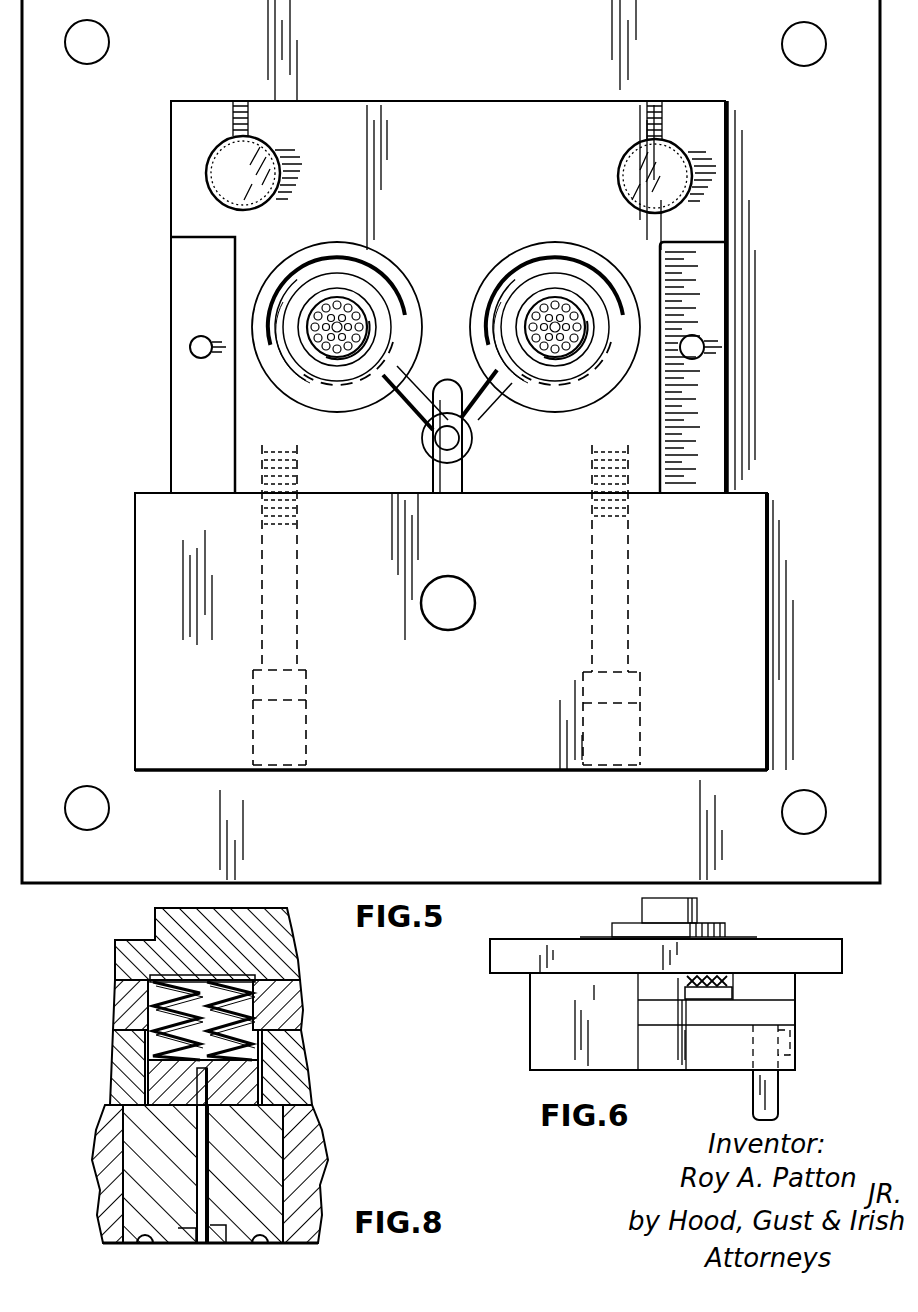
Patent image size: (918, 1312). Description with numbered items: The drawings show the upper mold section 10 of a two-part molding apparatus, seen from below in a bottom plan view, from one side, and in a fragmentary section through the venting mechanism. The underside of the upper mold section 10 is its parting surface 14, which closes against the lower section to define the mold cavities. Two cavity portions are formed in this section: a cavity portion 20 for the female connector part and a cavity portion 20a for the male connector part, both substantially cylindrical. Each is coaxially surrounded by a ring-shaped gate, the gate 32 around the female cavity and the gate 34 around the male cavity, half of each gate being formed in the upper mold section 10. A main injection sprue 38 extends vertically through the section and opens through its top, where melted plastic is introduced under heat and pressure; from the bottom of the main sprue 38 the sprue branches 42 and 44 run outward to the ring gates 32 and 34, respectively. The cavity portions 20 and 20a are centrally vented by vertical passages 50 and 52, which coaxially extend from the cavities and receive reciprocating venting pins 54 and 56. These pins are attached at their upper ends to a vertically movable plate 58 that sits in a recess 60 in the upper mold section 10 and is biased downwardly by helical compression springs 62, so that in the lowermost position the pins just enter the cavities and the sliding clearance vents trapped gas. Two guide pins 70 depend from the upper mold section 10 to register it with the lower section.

In FIG. 5, the upper mold section 10 is at (551, 101).
In FIG. 6, the upper mold section 10 is at (530, 1032).
In FIG. 5, the parting surface 14 is at (447, 224).
In FIG. 5, the cavity portion 20 is at (568, 362).
In FIG. 5, the cavity portion 20a is at (322, 362).
In FIG. 5, the ring-shaped gate 32 is at (600, 256).
In FIG. 5, the ring-shaped gate 34 is at (348, 246).
In FIG. 5, the main injection sprue 38 is at (456, 446).
In FIG. 5, the sprue branch 42 is at (483, 402).
In FIG. 5, the sprue branch 44 is at (422, 392).
In FIG. 5, the vertical passage 50 is at (549, 362).
In FIG. 8, the vertical passage 50 is at (200, 1190).
In FIG. 5, the vertical passage 52 is at (365, 316).
In FIG. 5, the venting pin 54 is at (554, 300).
In FIG. 8, the venting pin 54 is at (205, 1240).
In FIG. 5, the venting pin 56 is at (349, 365).
In FIG. 8, the vertically movable plate 58 is at (255, 1092).
In FIG. 6, the vertically movable plate 58 is at (712, 997).
In FIG. 8, the recess 60 is at (258, 1050).
In FIG. 6, the recess 60 is at (685, 992).
In FIG. 8, the helical compression springs 62 is at (230, 978).
In FIG. 6, the helical compression springs 62 is at (716, 977).
In FIG. 5, the guide pins 70 is at (217, 165).
In FIG. 6, the guide pins 70 is at (777, 1098).